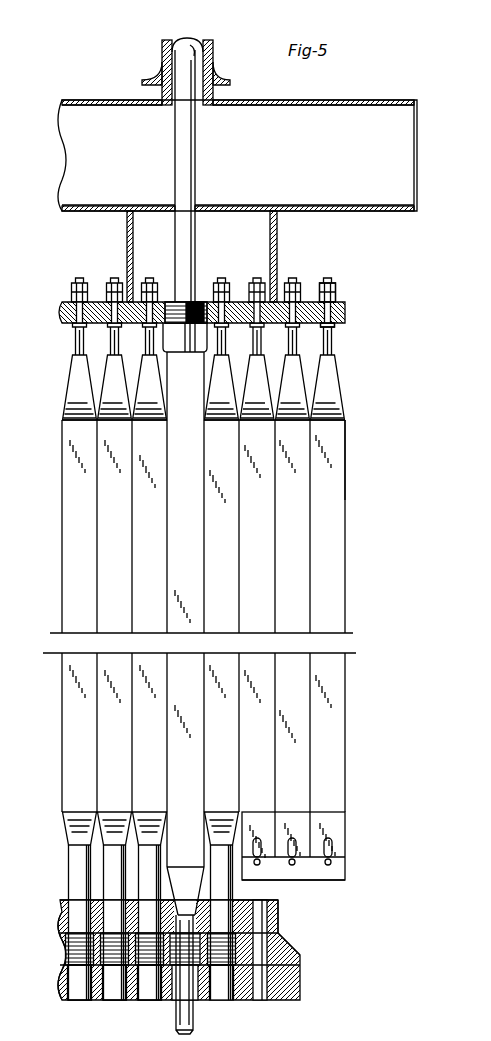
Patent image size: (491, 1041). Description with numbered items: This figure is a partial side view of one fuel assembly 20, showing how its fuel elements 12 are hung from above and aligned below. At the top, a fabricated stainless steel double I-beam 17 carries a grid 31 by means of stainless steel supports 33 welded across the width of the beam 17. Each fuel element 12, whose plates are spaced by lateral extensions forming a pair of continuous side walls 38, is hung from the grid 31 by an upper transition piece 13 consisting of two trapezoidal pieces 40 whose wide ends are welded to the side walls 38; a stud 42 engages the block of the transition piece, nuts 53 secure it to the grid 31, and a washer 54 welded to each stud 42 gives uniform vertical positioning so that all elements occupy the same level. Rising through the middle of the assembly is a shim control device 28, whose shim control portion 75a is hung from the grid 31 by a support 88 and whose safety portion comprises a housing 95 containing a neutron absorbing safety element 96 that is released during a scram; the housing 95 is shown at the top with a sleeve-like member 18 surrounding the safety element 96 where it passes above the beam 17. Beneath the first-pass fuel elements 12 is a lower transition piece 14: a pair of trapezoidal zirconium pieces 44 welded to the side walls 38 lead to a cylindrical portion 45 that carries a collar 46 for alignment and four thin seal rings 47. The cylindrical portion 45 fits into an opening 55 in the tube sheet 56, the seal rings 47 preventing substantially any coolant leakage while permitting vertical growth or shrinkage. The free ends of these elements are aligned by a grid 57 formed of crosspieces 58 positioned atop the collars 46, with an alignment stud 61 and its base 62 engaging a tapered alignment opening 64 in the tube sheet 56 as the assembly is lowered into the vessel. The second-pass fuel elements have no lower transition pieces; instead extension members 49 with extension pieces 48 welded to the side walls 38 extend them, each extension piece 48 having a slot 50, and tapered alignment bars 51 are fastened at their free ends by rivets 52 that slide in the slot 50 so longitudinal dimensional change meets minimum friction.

The double I-beam 17 is at (72, 182).
The safety element 96 is at (182, 140).
The shim control device 28 is at (210, 42).
The sleeve 18 is at (155, 54).
The housing 95 is at (152, 80).
The supports 33 is at (278, 250).
The grid 31 is at (345, 311).
The support 88 is at (203, 300).
The stud 42 is at (108, 282).
The nuts 53 is at (336, 292).
The washer 54 is at (335, 327).
The trapezoidal pieces 40 is at (106, 383).
The upper transition piece 13 is at (353, 403).
The side walls 38 is at (337, 442).
The fuel assembly 20 is at (231, 609).
The fuel element 12 is at (295, 527).
The shim control portion 75a is at (182, 657).
The extension pieces 48 is at (340, 820).
The extension members 49 is at (326, 849).
The slot 50 is at (332, 851).
The alignment bars 51 is at (340, 870).
The rivets 52 is at (328, 866).
The trapezoidal zirconium pieces 44 is at (70, 820).
The lower transition piece 14 is at (131, 906).
The cylindrical portion 45 is at (78, 873).
The tube sheet 56 is at (177, 963).
The crosspieces 58 is at (62, 915).
The base 62 is at (278, 905).
The grid 57 is at (288, 927).
The tapered alignment opening 64 is at (270, 948).
The collar 46 is at (70, 942).
The seal rings 47 is at (75, 976).
The opening 55 is at (125, 992).
The alignment stud 61 is at (262, 990).